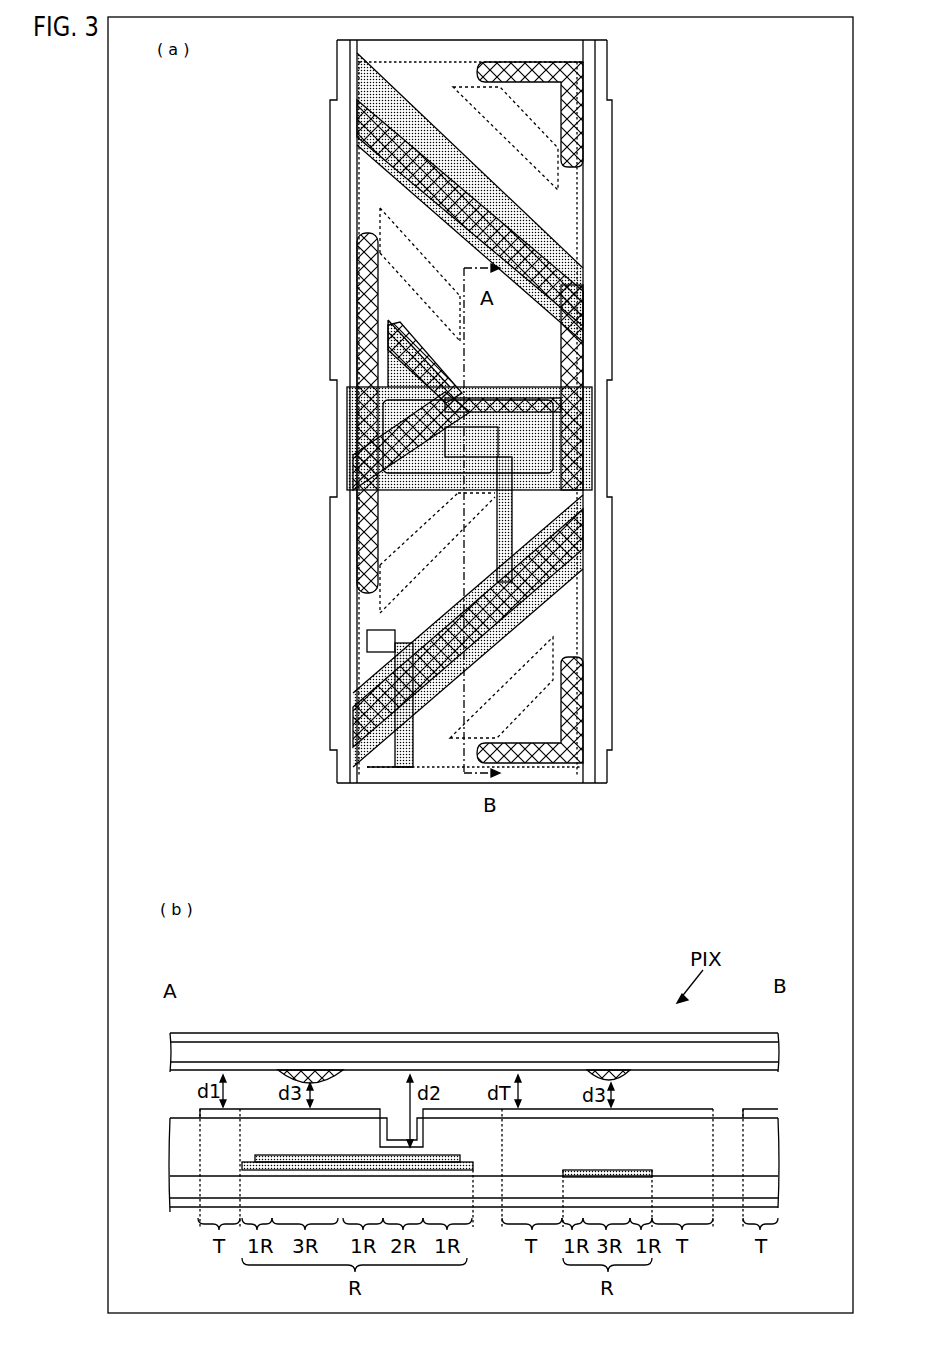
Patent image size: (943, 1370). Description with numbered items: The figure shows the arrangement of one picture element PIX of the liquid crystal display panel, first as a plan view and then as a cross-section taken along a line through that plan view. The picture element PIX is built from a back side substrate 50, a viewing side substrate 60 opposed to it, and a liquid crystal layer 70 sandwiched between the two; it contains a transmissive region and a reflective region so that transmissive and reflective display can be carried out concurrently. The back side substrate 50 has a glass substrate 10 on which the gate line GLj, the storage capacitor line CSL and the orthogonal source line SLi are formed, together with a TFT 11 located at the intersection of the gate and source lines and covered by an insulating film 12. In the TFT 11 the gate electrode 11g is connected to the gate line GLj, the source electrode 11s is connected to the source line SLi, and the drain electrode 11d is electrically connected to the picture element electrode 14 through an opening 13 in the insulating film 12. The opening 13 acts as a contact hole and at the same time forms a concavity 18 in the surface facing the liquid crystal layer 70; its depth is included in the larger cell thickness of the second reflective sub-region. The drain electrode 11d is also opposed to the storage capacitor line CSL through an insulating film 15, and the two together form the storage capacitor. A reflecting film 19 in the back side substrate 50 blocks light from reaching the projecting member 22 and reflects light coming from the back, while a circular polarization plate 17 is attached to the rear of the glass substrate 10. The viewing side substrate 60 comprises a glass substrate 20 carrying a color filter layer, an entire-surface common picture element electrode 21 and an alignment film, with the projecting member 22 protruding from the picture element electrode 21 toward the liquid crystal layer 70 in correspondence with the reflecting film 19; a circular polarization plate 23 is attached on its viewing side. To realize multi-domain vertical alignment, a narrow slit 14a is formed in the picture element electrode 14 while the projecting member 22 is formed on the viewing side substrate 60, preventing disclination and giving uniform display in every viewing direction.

The picture element PIX is at (620, 96).
The projecting member 22 is at (576, 298).
The slit 14a is at (560, 160).
The picture element electrode 14 is at (585, 241).
The gate line GLj is at (545, 782).
The source line SLi is at (340, 548).
The storage capacitor line CSL is at (383, 439).
The concavity 18 is at (393, 1133).
The opening 13 is at (493, 443).
The TFT 11 is at (355, 891).
The source electrode 11s is at (368, 777).
The gate electrode 11g is at (390, 790).
The drain electrode 11d is at (408, 758).
The viewing side substrate 60 is at (163, 1032).
The liquid crystal layer 70 is at (183, 1092).
The back side substrate 50 is at (163, 1118).
The circular polarization plate 23 is at (778, 1038).
The glass substrate 20 is at (778, 1050).
The picture element electrode 21 is at (780, 1070).
The insulating film 12 is at (770, 1143).
The reflecting film 19 is at (652, 1170).
The insulating film 15 is at (353, 1158).
The glass substrate 10 is at (772, 1188).
The circular polarization plate 17 is at (777, 1200).